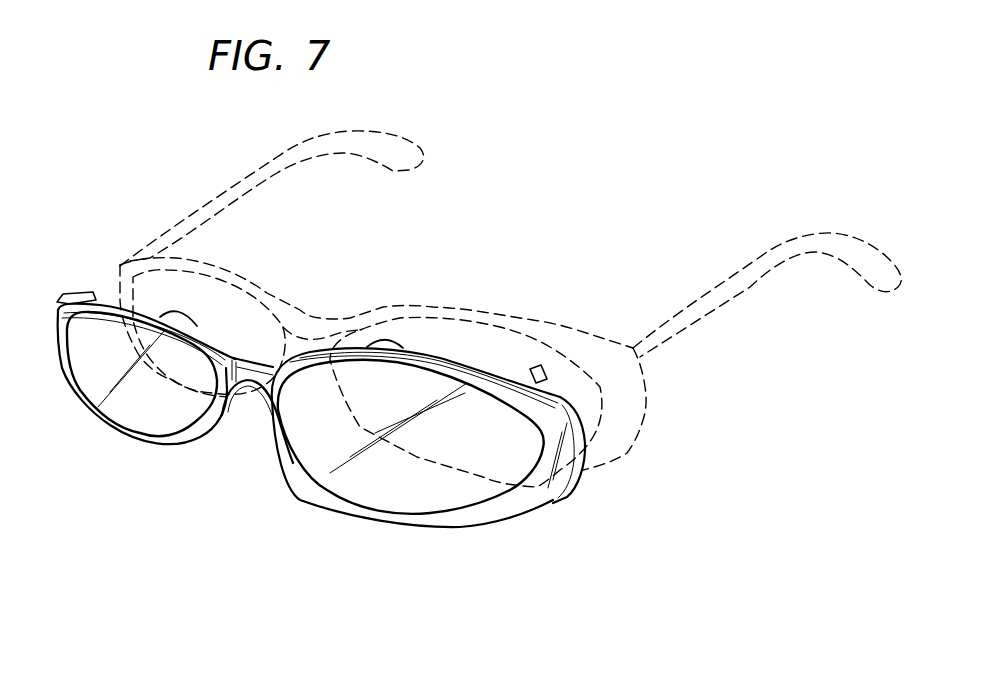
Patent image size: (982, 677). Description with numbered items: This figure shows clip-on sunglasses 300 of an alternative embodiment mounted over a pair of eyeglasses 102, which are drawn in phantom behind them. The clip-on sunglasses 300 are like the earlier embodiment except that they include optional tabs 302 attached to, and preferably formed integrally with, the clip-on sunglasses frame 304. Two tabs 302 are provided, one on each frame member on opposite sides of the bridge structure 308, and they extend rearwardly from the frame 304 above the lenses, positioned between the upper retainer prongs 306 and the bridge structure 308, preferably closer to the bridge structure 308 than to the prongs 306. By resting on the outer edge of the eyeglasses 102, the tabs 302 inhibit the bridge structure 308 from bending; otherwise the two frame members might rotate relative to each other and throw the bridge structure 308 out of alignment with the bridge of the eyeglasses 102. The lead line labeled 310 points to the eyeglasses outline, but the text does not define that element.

The eyeglasses 102 is at (724, 285).
The clip-on sunglasses 300 is at (105, 259).
The tabs 302 is at (186, 306).
The clip-on sunglasses frame 304 is at (545, 510).
The upper retainer prongs 306 is at (78, 293).
The bridge structure 308 is at (247, 418).
The frame front 310 is at (320, 316).